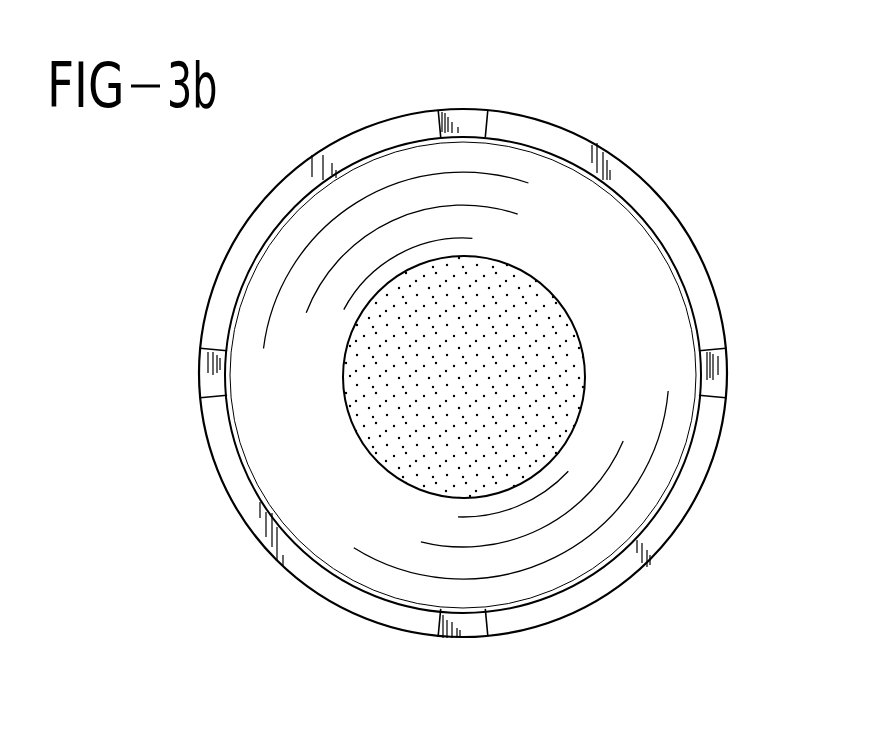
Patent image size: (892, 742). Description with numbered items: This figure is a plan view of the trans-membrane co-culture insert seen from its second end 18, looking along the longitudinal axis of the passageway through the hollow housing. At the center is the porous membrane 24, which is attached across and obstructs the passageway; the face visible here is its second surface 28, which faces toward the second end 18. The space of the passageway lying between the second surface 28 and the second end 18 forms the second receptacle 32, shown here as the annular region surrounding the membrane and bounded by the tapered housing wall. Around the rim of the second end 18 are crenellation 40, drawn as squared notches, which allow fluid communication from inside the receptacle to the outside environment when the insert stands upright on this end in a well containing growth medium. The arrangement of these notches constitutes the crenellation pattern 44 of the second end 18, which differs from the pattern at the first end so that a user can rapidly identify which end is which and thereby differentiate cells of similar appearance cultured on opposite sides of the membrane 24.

The second end 18 is at (627, 163).
The porous membrane 24 is at (580, 320).
The second surface 28 is at (500, 427).
The second receptacle 32 is at (341, 557).
The crenellation 40 is at (475, 117).
The crenellation pattern 44 is at (448, 113).